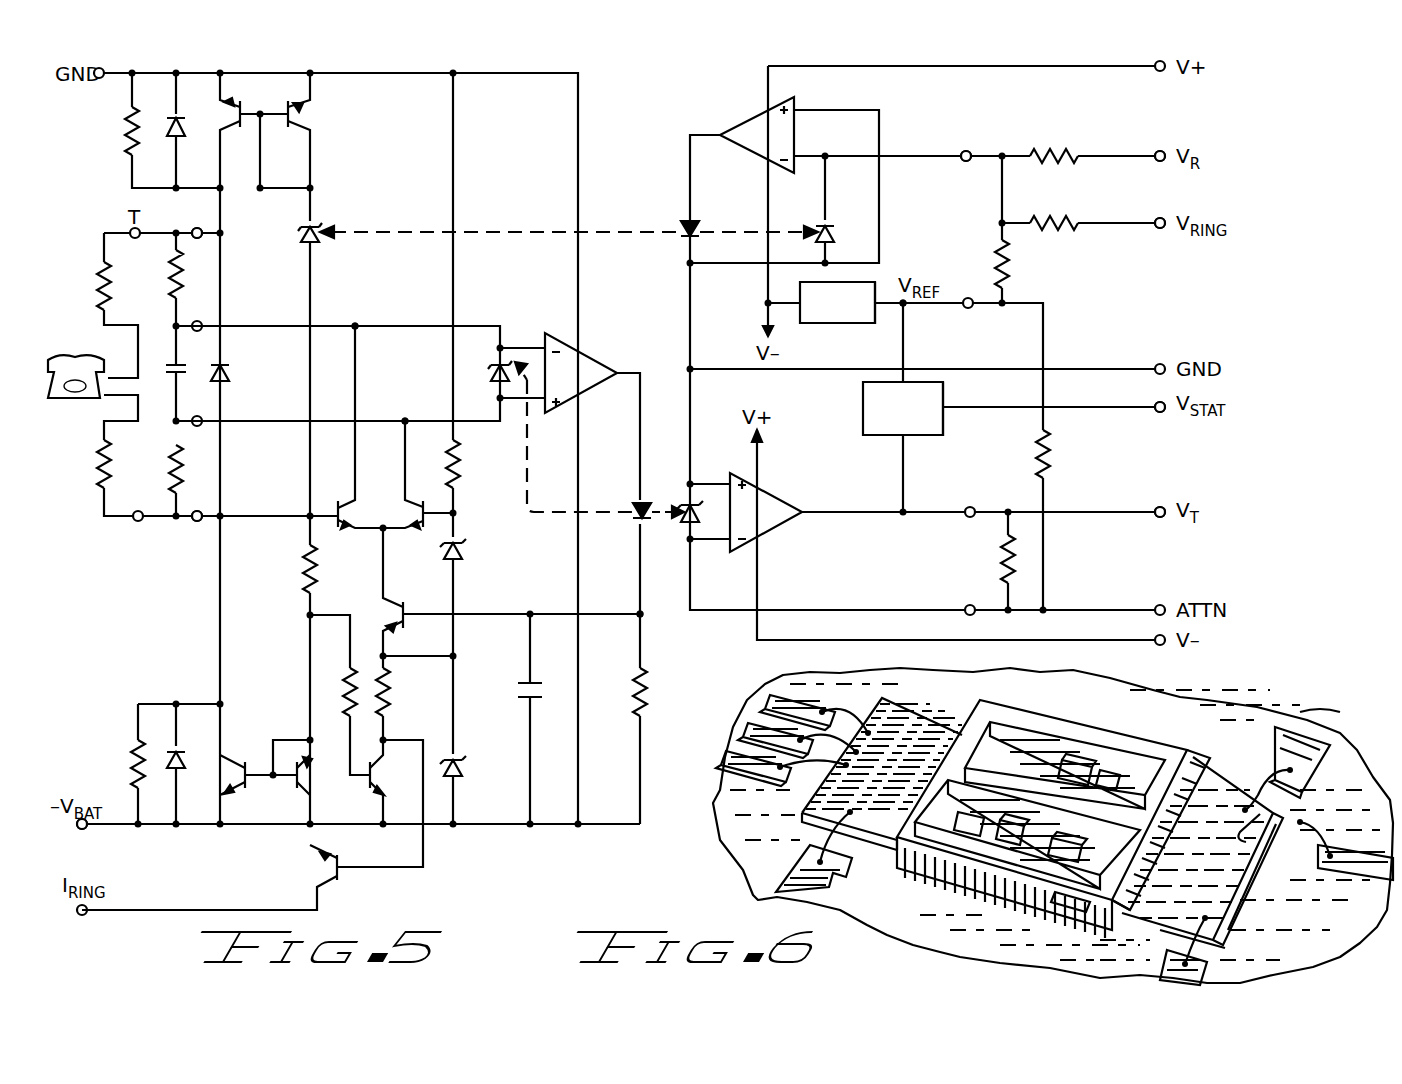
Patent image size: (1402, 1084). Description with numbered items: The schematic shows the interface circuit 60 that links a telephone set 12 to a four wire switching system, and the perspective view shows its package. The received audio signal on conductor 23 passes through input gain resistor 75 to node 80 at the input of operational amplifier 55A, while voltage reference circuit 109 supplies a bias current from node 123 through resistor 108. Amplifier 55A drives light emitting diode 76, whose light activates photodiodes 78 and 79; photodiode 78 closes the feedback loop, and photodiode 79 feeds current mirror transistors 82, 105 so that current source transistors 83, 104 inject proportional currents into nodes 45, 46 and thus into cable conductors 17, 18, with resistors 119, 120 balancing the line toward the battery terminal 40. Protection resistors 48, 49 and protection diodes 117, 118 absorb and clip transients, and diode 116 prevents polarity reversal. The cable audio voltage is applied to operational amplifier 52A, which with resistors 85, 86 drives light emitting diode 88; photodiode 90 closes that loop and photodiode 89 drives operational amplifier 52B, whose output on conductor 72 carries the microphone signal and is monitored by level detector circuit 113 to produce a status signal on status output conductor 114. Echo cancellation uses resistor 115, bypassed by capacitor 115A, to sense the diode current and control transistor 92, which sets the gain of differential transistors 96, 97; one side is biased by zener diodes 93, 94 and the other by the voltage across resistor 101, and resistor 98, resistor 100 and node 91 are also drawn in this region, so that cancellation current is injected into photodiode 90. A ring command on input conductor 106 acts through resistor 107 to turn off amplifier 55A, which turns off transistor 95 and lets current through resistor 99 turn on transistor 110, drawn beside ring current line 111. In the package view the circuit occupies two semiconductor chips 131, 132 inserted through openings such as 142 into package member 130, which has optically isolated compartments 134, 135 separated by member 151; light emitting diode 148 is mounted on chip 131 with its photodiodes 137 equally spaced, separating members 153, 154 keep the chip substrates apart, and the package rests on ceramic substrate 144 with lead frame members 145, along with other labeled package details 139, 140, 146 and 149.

In FIG. 5, the telephone set 12 is at (92, 354).
In FIG. 5, the cable conductor 17 is at (405, 418).
In FIG. 5, the cable conductor 18 is at (356, 326).
In FIG. 5, the conductor 23 is at (1158, 150).
In FIG. 5, the battery terminal 40 is at (86, 830).
In FIG. 5, the node 45 is at (174, 230).
In FIG. 5, the node 46 is at (182, 520).
In FIG. 5, the external protection resistor 48 is at (94, 282).
In FIG. 5, the external protection resistor 49 is at (96, 462).
In FIG. 5, the operational amplifier 52A is at (582, 342).
In FIG. 5, the operational amplifier 52B is at (762, 538).
In FIG. 5, the operational amplifier 55A is at (744, 112).
In FIG. 6, the interface circuit 60 is at (918, 864).
In FIG. 5, the conductor 72 is at (1160, 510).
In FIG. 5, the input gain resistor 75 is at (1056, 146).
In FIG. 5, the light emitting diode 76 is at (674, 220).
In FIG. 5, the photodiode 78 is at (832, 224).
In FIG. 5, the photodiode 79 is at (312, 220).
In FIG. 5, the node 80 is at (946, 154).
In FIG. 5, the current mirror transistor 82 is at (303, 120).
In FIG. 5, the current source transistor 83 is at (232, 128).
In FIG. 5, the resistor 85 is at (168, 270).
In FIG. 5, the resistor 86 is at (182, 456).
In FIG. 5, the light emitting diode 88 is at (638, 522).
In FIG. 5, the photodiode 89 is at (682, 522).
In FIG. 5, the photodiode 90 is at (492, 374).
In FIG. 5, the node 91 is at (636, 612).
In FIG. 5, the transistor 92 is at (379, 599).
In FIG. 5, the zener diode 93 is at (462, 774).
In FIG. 5, the zener diode 94 is at (462, 552).
In FIG. 5, the transistor 95 is at (368, 788).
In FIG. 5, the transistor 96 is at (338, 498).
In FIG. 5, the transistor 97 is at (426, 498).
In FIG. 5, the resistor 98 is at (460, 462).
In FIG. 5, the resistor 99 is at (388, 683).
In FIG. 5, the resistor 100 is at (344, 682).
In FIG. 5, the resistor 101 is at (300, 562).
In FIG. 5, the current source transistor 104 is at (254, 786).
In FIG. 5, the current mirror transistor 105 is at (304, 749).
In FIG. 5, the input conductor 106 is at (1158, 220).
In FIG. 5, the resistor 107 is at (1044, 216).
In FIG. 5, the resistor 108 is at (1010, 260).
In FIG. 5, the voltage reference circuit 109 is at (856, 322).
In FIG. 5, the transistor 110 is at (340, 874).
In FIG. 5, the ring current input line 111 is at (140, 908).
In FIG. 5, the level detector circuit 113 is at (882, 406).
In FIG. 5, the status output conductor 114 is at (1134, 406).
In FIG. 5, the resistor 115 is at (648, 692).
In FIG. 5, the capacitor 115A is at (520, 692).
In FIG. 5, the diode 116 is at (228, 372).
In FIG. 5, the protection diode 117 is at (188, 128).
In FIG. 5, the protection diode 118 is at (180, 754).
In FIG. 5, the resistor 119 is at (126, 146).
In FIG. 5, the resistor 120 is at (134, 754).
In FIG. 5, the node 123 is at (904, 306).
In FIG. 6, the package member 130 is at (1038, 908).
In FIG. 6, the semiconductor chip 131 is at (1224, 908).
In FIG. 6, the semiconductor chip 132 is at (924, 715).
In FIG. 6, the compartment 134 is at (960, 746).
In FIG. 6, the compartment 135 is at (1128, 884).
In FIG. 6, the photodiodes 137 is at (1020, 726).
In FIG. 6, the chip 139 is at (1076, 918).
In FIG. 6, the package frame corner 140 is at (1192, 746).
In FIG. 6, the accommodating opening 142 is at (1148, 946).
In FIG. 6, the ceramic substrate 144 is at (1266, 710).
In FIG. 6, the lead frame member 145 is at (1280, 736).
In FIG. 6, the bonding wire 146 is at (1305, 820).
In FIG. 6, the light emitting diode 148 is at (1114, 768).
In FIG. 6, the cavity 149 is at (966, 850).
In FIG. 6, the separating member 151 is at (1146, 842).
In FIG. 6, the separating member 153 is at (1082, 760).
In FIG. 6, the separating member 154 is at (1009, 848).